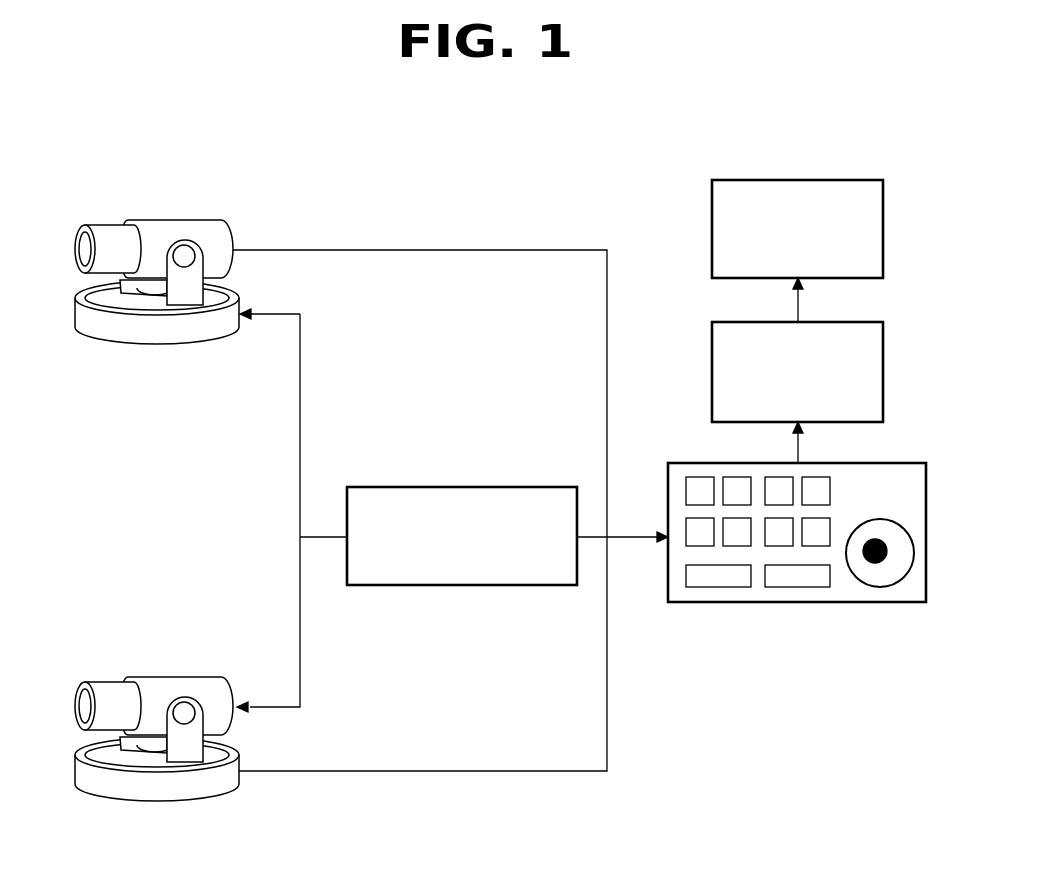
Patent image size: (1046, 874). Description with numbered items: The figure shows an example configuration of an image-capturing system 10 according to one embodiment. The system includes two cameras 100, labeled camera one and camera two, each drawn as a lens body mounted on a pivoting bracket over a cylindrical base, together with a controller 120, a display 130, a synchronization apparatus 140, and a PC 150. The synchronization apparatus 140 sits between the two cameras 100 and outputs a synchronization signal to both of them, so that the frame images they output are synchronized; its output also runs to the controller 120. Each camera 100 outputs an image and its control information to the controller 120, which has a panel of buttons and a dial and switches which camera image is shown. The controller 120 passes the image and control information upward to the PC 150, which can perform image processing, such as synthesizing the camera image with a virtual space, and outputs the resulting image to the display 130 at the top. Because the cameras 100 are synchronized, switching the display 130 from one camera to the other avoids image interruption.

The image-capturing system 10 is at (526, 206).
The camera 100 is at (184, 218).
The controller 120 is at (899, 604).
The display 130 is at (712, 226).
The synchronization apparatus 140 is at (464, 486).
The PC 150 is at (712, 372).